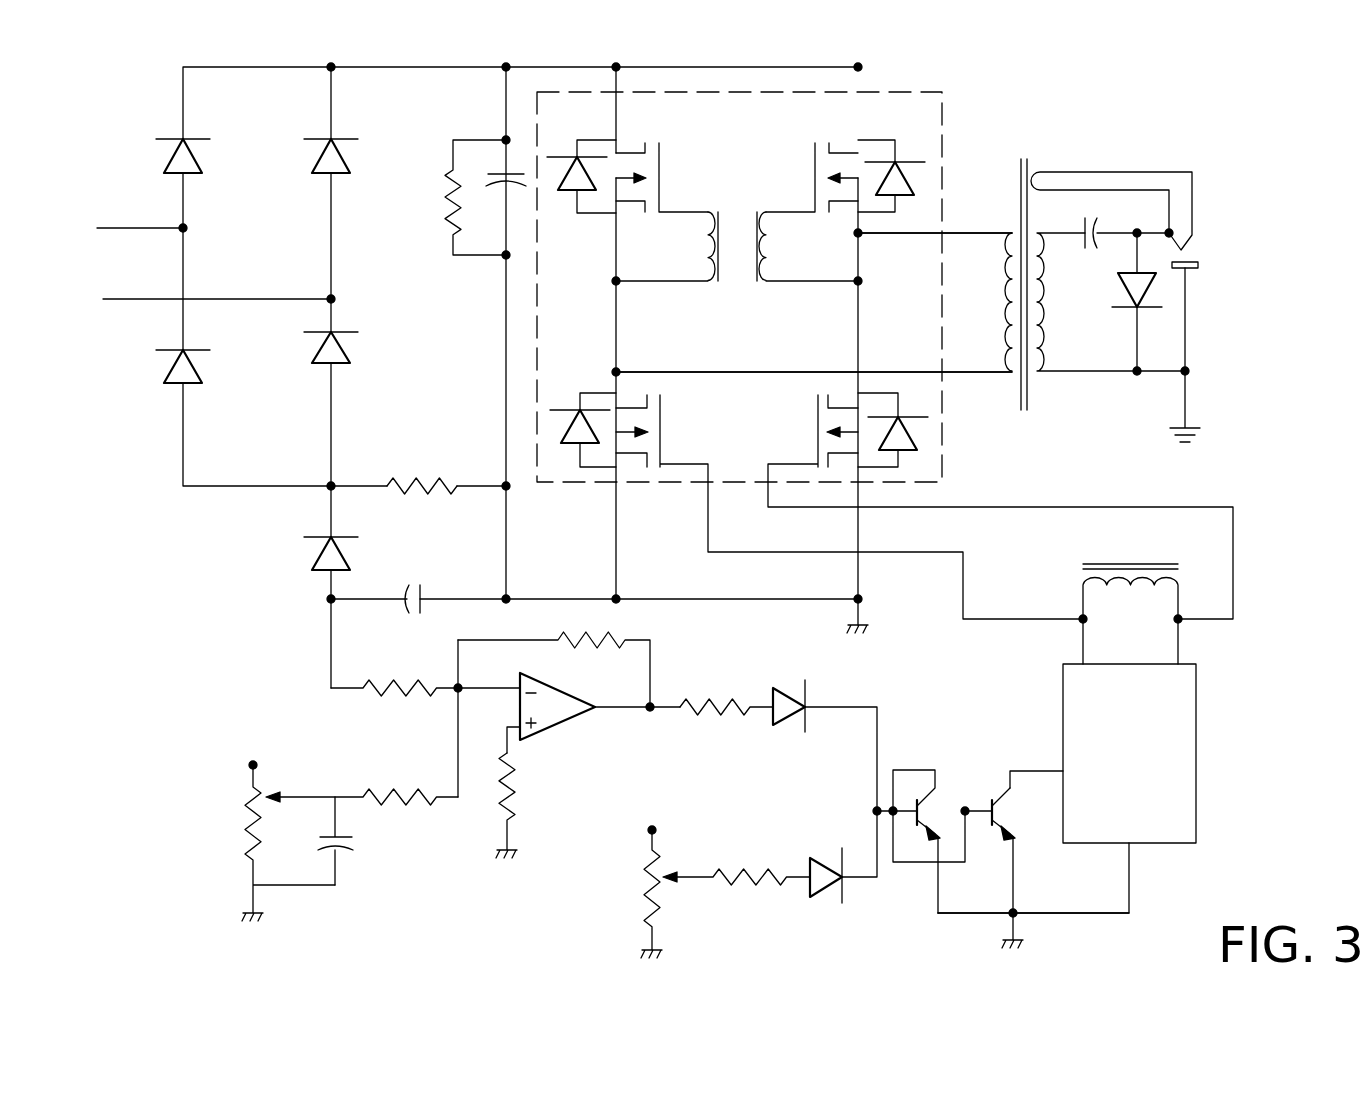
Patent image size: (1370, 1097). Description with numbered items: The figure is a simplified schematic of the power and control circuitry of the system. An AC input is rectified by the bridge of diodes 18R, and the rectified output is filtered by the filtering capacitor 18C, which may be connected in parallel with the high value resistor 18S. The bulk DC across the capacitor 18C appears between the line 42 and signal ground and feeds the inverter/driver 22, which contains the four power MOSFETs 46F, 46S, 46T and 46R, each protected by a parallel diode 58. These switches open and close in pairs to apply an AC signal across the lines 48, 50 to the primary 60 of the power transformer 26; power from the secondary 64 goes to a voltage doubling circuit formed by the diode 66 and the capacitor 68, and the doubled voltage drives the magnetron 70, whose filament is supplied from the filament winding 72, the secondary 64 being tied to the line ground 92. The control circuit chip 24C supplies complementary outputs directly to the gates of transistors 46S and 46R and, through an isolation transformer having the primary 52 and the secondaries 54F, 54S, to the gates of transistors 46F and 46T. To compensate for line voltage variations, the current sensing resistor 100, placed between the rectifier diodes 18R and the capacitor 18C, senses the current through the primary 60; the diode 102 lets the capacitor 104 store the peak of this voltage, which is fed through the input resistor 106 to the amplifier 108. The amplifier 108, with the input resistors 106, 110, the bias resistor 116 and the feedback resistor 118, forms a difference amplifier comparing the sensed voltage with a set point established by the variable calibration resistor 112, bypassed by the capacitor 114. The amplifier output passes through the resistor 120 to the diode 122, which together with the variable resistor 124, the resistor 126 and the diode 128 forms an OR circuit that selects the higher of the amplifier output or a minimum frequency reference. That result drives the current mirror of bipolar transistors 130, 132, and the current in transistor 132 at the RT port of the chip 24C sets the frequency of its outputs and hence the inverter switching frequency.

The rectifier diodes 18R is at (200, 157).
The high value resistor 18S is at (443, 207).
The filtering capacitor 18C is at (498, 185).
The current sensing resistor 100 is at (428, 476).
The diode 102 is at (320, 558).
The capacitor 104 is at (425, 588).
The line 42 is at (685, 67).
The inverter/driver 22 is at (757, 82).
The power MOSFET 46F is at (661, 167).
The power MOSFET 46T is at (815, 165).
The power MOSFET 46S is at (662, 430).
The power MOSFET 46R is at (820, 432).
The secondary 54F is at (719, 252).
The secondary 54S is at (758, 255).
The diode 58 is at (897, 165).
The line 48 is at (915, 233).
The line 50 is at (955, 372).
The primary 60 is at (1010, 232).
The power transformer 26 is at (1030, 395).
The secondary 64 is at (1040, 233).
The capacitor 68 is at (1090, 248).
The diode 66 is at (1130, 300).
The filament winding 72 is at (1040, 172).
The magnetron 70 is at (1198, 263).
The line ground 92 is at (1190, 372).
The primary 52 is at (1083, 562).
The control circuit chip 24C is at (1196, 740).
The input resistor 106 is at (385, 685).
The feedback resistor 118 is at (620, 636).
The amplifier 108 is at (582, 692).
The bias resistor 116 is at (515, 765).
The input resistor 110 is at (405, 792).
The variable calibration resistor 112 is at (245, 805).
The bypass capacitor 114 is at (345, 852).
The resistor 120 is at (690, 702).
The diode 122 is at (790, 692).
The variable resistor 124 is at (645, 870).
The resistor 126 is at (765, 872).
The diode 128 is at (815, 858).
The bipolar transistor 130 is at (915, 808).
The bipolar transistor 132 is at (992, 803).